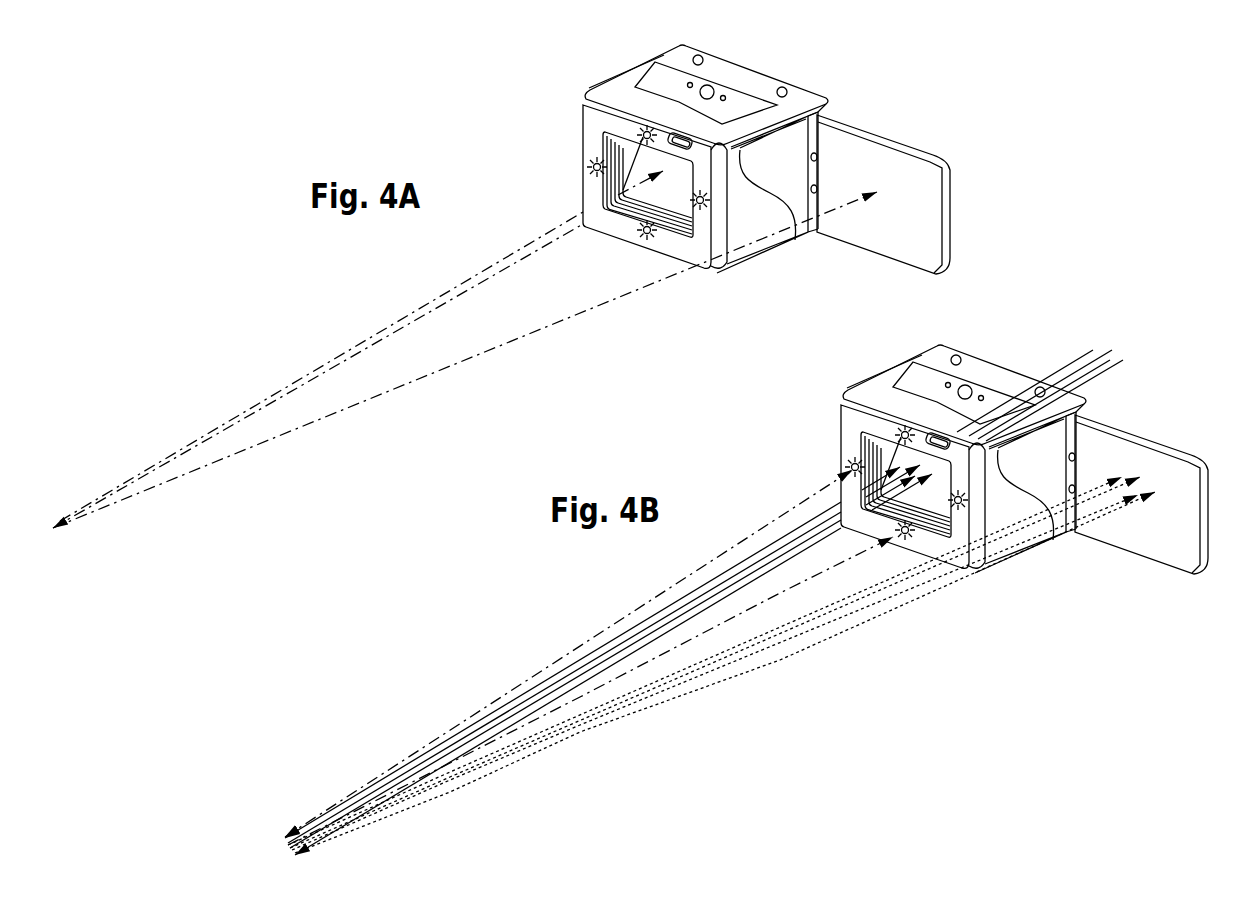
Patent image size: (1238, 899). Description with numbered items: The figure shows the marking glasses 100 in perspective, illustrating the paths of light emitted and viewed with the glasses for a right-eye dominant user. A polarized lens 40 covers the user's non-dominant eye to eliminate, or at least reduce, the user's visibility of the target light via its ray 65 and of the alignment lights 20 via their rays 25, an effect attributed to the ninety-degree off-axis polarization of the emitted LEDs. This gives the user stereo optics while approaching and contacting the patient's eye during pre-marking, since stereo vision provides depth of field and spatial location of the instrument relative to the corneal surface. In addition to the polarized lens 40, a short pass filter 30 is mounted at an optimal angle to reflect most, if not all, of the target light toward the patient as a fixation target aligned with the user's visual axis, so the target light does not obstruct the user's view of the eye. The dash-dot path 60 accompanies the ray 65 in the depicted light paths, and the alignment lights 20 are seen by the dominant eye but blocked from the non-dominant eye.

In FIG. 4A, the marking glasses 100 is at (739, 159).
In FIG. 4B, the marking glasses 100 is at (1002, 459).
In FIG. 4A, the polarized lens 40 is at (893, 158).
In FIG. 4B, the polarized lens 40 is at (1154, 457).
In FIG. 4A, the short pass filter 30 is at (633, 163).
In FIG. 4B, the alignment lights 20 is at (840, 413).
In FIG. 4B, the rays 25 is at (876, 610).
In FIG. 4A, the optical axis 60 is at (490, 277).
In FIG. 4A, the ray 65 is at (508, 253).